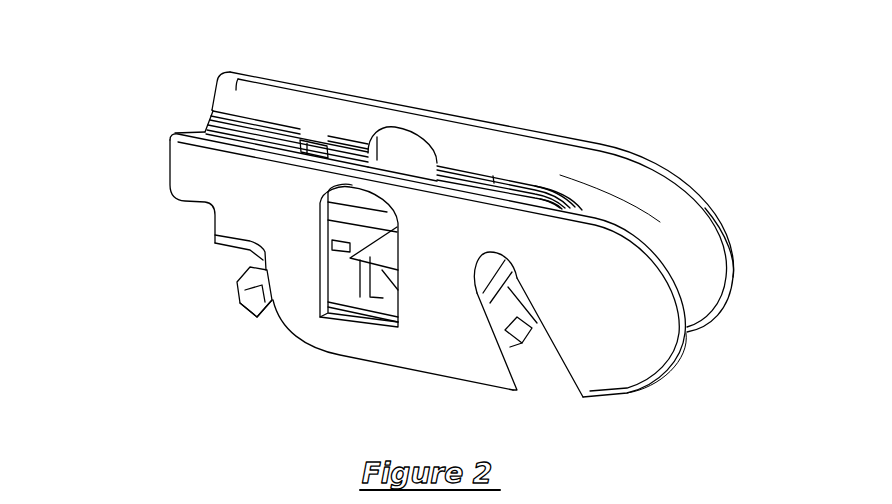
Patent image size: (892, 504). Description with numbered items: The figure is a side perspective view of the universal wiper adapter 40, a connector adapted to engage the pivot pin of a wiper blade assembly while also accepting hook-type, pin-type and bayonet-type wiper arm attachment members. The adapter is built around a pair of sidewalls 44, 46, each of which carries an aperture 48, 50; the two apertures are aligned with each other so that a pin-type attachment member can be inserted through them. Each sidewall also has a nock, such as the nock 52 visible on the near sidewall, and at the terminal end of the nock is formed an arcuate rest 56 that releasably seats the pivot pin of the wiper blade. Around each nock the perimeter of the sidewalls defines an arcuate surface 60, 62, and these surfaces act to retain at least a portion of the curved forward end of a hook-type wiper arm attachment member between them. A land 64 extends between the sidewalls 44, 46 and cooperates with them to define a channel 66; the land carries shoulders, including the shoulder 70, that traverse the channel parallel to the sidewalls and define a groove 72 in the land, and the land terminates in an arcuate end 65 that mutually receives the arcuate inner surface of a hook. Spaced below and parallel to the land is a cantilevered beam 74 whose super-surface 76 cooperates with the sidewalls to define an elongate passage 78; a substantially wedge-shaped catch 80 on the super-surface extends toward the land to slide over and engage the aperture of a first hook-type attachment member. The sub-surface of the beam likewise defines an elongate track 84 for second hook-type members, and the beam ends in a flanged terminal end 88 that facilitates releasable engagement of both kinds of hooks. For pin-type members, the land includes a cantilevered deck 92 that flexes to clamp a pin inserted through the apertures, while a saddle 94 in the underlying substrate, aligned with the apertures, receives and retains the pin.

The universal wiper adapter 40 is at (126, 143).
The sidewall 44 is at (452, 357).
The sidewall 46 is at (580, 140).
The aperture 48 is at (323, 220).
The aperture 50 is at (398, 128).
The nock 52 is at (567, 393).
The arcuate rest 56 is at (484, 252).
The arcuate surface 60 is at (686, 340).
The arcuate surface 62 is at (734, 266).
The land 64 is at (240, 136).
The arcuate end 65 is at (545, 197).
The channel 66 is at (586, 189).
The shoulder 70 is at (212, 112).
The groove 72 is at (198, 118).
The cantilevered beam 74 is at (240, 285).
The super-surface 76 is at (257, 267).
The elongate passage 78 is at (504, 321).
The catch 80 is at (380, 287).
The elongate track 84 is at (532, 341).
The flanged terminal end 88 is at (240, 300).
The cantilevered deck 92 is at (342, 155).
The saddle 94 is at (347, 270).